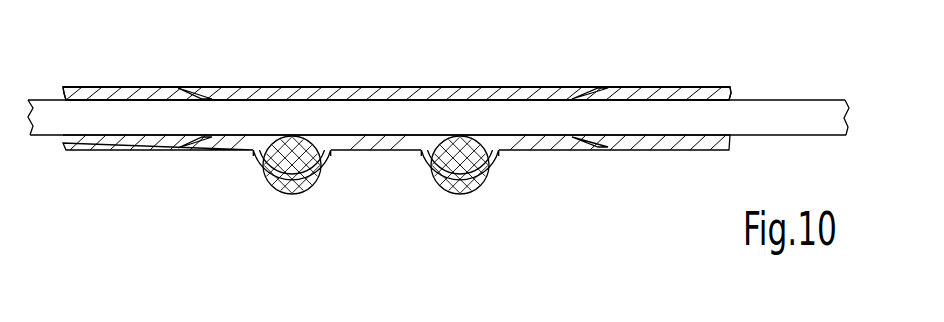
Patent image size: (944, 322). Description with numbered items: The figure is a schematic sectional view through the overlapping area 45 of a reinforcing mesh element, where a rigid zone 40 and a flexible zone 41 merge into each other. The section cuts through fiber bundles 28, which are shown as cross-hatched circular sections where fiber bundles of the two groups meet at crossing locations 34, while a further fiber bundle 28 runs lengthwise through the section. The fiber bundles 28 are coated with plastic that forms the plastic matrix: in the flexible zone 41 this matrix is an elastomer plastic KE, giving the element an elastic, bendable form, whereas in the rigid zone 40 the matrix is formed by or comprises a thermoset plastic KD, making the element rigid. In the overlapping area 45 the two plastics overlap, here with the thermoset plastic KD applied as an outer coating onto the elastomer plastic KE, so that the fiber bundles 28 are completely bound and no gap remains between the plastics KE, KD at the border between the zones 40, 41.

The fiber bundle 28 is at (833, 120).
The flexible zone 41 is at (645, 60).
The crossing location 34 is at (242, 189).
The overlapping area 45 is at (184, 72).
The rigid zone 40 is at (494, 82).
The elastomer plastic KE is at (122, 89).
The thermoset plastic KD is at (412, 93).